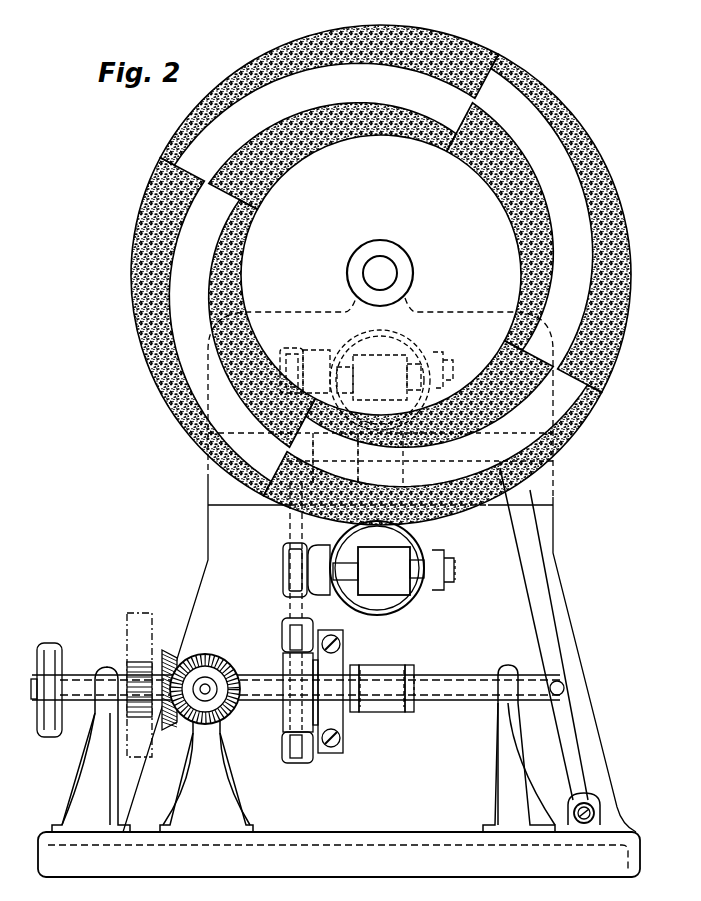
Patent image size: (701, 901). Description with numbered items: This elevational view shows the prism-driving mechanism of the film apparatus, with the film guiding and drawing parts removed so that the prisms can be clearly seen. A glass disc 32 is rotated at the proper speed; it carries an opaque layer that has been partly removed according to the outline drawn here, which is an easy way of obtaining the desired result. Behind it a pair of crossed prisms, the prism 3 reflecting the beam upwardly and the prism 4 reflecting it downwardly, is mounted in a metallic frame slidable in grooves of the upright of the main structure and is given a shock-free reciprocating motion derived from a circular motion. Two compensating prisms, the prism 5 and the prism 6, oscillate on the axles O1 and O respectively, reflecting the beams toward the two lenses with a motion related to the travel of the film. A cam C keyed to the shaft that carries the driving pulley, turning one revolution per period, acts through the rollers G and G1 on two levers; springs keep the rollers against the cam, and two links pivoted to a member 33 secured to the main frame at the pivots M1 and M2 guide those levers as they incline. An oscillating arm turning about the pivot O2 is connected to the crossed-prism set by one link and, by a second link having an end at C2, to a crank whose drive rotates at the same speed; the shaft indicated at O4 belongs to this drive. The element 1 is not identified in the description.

The glass disc 32 is at (381, 275).
The axle of rotation of compensating prism O is at (452, 372).
The compensating prism 6 is at (366, 380).
The prism 3 is at (356, 452).
The prism 4 is at (404, 456).
The compensating prism 5 is at (396, 548).
The axle of rotation of compensating prism O1 is at (452, 570).
The roller G1 is at (294, 638).
The pivot M2 is at (322, 634).
The cam C is at (287, 712).
The roller G is at (290, 762).
The pivot M1 is at (330, 752).
The member 33 is at (330, 720).
The shaft 1 is at (393, 666).
The shaft O4 is at (442, 701).
The second link pivot point C2 is at (564, 690).
The pivot of oscillating arm O2 is at (597, 806).